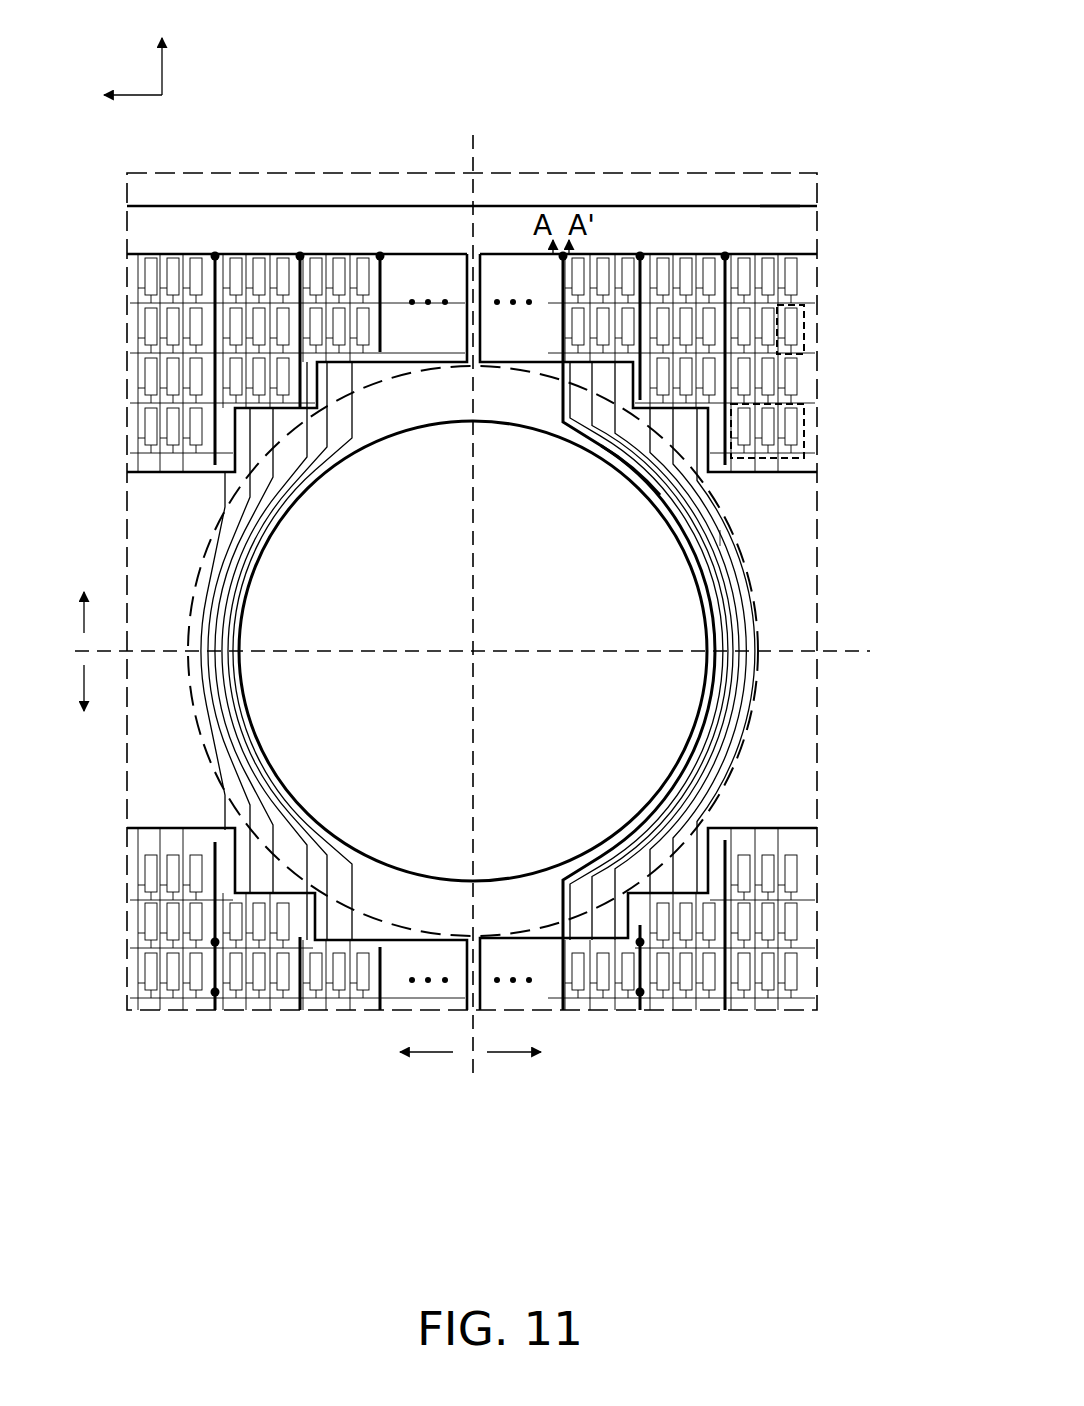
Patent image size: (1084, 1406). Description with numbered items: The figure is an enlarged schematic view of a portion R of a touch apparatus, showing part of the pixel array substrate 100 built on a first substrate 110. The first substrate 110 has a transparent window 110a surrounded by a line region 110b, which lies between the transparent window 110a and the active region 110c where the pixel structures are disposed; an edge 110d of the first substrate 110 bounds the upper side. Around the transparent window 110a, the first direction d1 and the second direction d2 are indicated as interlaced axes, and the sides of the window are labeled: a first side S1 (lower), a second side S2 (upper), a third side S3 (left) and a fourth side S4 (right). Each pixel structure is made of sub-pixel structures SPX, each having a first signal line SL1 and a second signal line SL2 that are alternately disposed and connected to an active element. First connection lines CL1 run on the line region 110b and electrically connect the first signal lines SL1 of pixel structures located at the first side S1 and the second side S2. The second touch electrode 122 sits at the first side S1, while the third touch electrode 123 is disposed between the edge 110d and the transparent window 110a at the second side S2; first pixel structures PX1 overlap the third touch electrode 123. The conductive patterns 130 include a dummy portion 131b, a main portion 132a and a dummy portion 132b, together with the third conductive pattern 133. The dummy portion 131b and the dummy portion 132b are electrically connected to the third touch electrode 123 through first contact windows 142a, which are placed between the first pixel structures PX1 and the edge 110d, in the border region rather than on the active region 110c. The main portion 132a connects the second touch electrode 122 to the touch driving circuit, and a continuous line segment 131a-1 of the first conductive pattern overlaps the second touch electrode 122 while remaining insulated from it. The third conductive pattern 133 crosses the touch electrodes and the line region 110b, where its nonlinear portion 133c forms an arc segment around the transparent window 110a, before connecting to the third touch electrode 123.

The pixel array substrate 100 is at (935, 1257).
The first substrate 110 is at (805, 232).
The transparent window 110a is at (695, 583).
The line region 110b is at (720, 538).
The active region 110c is at (770, 480).
The edge of the first substrate 110d is at (783, 200).
The second touch electrode 122 is at (795, 828).
The third touch electrode 123 is at (800, 478).
The conductive patterns 130 is at (175, 1052).
The dummy portion of the first conductive pattern 131b is at (727, 310).
The continuous line segment 131a-1 is at (722, 995).
The main portion of the second conductive pattern 132a is at (645, 972).
The dummy portion of the second conductive pattern 132b is at (652, 300).
The third conductive pattern 133 is at (565, 972).
The nonlinear portion 133c is at (648, 478).
The first contact window 142a is at (717, 248).
The first connection line CL1 is at (745, 575).
The first signal line SL1 is at (128, 266).
The second signal line SL2 is at (130, 303).
The sub-pixel structure SPX is at (805, 330).
The first pixel structure PX1 is at (806, 430).
The first side S1 is at (64, 688).
The second side S2 is at (64, 614).
The third side S3 is at (409, 1059).
The fourth side S4 is at (535, 1059).
The portion R is at (195, 173).
The first direction d1 is at (164, 47).
The second direction d2 is at (113, 94).